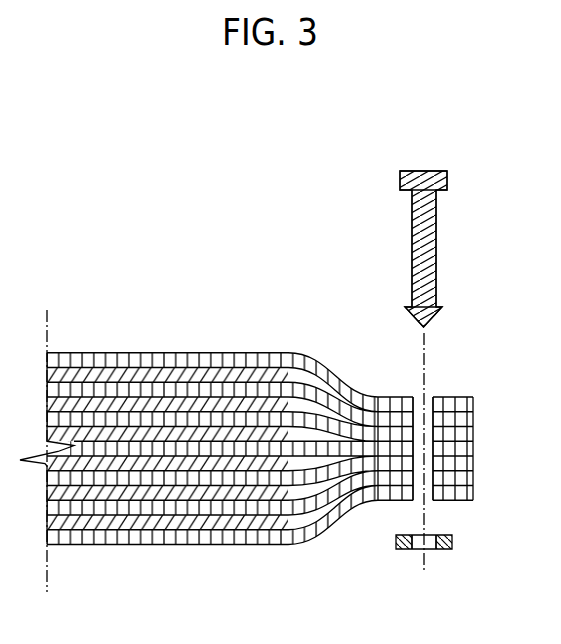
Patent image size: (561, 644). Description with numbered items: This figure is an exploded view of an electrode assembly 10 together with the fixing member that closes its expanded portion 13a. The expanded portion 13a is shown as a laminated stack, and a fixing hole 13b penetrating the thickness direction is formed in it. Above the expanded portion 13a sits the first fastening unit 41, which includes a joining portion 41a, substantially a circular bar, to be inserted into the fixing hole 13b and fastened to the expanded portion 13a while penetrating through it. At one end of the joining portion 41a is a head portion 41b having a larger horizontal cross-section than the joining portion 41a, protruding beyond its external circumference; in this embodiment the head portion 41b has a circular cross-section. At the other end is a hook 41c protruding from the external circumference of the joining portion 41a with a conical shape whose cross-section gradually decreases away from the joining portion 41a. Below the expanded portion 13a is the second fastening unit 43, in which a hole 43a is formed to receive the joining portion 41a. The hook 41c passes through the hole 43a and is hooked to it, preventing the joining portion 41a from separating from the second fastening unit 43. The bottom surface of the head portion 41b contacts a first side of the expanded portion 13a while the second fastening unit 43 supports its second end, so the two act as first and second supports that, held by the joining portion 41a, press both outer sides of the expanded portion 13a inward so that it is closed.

The laminated body 10 is at (162, 344).
The expanded portion 13a is at (455, 422).
The fixing hole 13b is at (432, 397).
The first fastening unit 41 is at (442, 218).
The joining portion 41a is at (437, 244).
The head portion 41b is at (413, 170).
The hook 41c is at (433, 318).
The second fastening unit 43 is at (421, 571).
The hole 43a is at (413, 550).